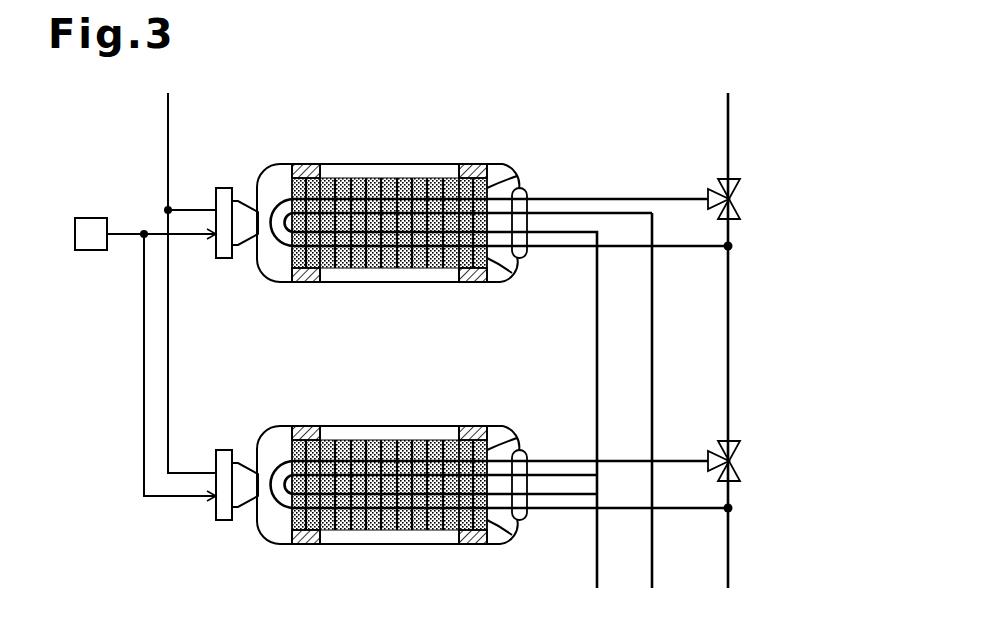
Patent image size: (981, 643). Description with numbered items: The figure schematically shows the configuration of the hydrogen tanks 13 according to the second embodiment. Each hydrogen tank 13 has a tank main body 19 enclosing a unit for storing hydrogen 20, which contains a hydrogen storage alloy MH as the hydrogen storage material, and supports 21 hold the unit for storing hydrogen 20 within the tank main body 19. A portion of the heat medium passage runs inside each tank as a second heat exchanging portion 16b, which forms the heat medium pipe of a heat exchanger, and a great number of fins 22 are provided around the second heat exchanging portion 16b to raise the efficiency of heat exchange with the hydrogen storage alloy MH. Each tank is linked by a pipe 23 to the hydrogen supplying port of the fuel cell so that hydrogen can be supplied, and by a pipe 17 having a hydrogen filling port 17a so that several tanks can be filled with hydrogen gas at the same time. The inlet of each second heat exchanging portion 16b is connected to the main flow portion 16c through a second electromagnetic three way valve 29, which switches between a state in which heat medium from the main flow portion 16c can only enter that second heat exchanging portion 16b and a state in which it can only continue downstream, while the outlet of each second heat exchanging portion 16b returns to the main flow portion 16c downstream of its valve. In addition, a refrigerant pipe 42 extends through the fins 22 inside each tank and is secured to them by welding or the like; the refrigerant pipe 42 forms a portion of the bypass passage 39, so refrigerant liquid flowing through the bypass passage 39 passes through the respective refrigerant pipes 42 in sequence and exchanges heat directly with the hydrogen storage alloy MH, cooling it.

The hydrogen tank 13 is at (261, 285).
The second heat exchanging portion 16b is at (398, 176).
The main flow portion 16c is at (728, 296).
The pipe 17 is at (144, 352).
The hydrogen filling port 17a is at (93, 250).
The tank main body 19 is at (517, 282).
The unit for storing hydrogen 20 is at (359, 280).
The support 21 is at (300, 283).
The fin 22 is at (368, 178).
The pipe 23 is at (168, 146).
The second electromagnetic three way valve 29 is at (718, 183).
The bypass passage 39 is at (652, 351).
The refrigerant pipe 42 is at (519, 188).
The hydrogen storage alloy MH is at (440, 163).